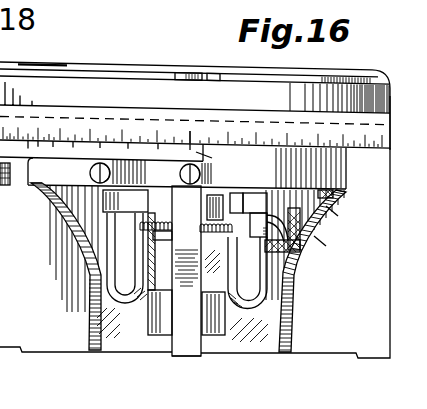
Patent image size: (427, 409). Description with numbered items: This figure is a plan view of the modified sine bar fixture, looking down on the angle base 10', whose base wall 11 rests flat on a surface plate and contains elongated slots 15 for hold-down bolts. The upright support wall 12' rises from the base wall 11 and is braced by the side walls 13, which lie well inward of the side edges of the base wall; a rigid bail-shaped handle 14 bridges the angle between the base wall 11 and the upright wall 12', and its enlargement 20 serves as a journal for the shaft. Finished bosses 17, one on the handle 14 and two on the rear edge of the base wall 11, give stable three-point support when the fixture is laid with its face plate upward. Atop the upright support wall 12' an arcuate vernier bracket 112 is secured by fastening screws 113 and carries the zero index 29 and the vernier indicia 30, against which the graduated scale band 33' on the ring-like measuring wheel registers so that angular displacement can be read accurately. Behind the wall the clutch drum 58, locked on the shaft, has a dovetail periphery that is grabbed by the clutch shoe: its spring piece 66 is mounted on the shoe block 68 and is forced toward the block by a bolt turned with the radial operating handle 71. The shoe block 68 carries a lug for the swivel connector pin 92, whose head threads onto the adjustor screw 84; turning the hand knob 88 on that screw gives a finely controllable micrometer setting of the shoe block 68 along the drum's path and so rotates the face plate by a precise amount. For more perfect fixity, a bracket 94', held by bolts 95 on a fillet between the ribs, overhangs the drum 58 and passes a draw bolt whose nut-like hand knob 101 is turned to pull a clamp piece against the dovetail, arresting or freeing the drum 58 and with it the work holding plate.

The arcuate vernier bracket 112 is at (178, 162).
The graduated scale band 33' is at (408, 123).
The upright support wall 12' is at (132, 183).
The fastening screws 113 is at (89, 175).
The vernier indicia 30 is at (135, 160).
The index or zero indicium 29 is at (217, 159).
The base wall 11 is at (195, 253).
The bracing side walls 13 is at (62, 240).
The clutch drum 58 is at (126, 202).
The shoe block 68 is at (168, 215).
The spring piece of clutch shoe 66 is at (171, 228).
The radial operating handle 71 is at (157, 238).
The elongated slots 15 is at (125, 304).
The bail-shaped handle 14 is at (185, 313).
The enlargement of handle 20 is at (160, 330).
The adjustor screw 84 is at (222, 253).
The swivel connector pin 92 is at (256, 238).
The operating hand knob 88 is at (288, 228).
The bolts 95 is at (334, 196).
The bracket 94' is at (349, 221).
The nut-like hand knob 101 is at (322, 242).
The bosses 17 is at (372, 358).
The angle base 10' is at (62, 374).